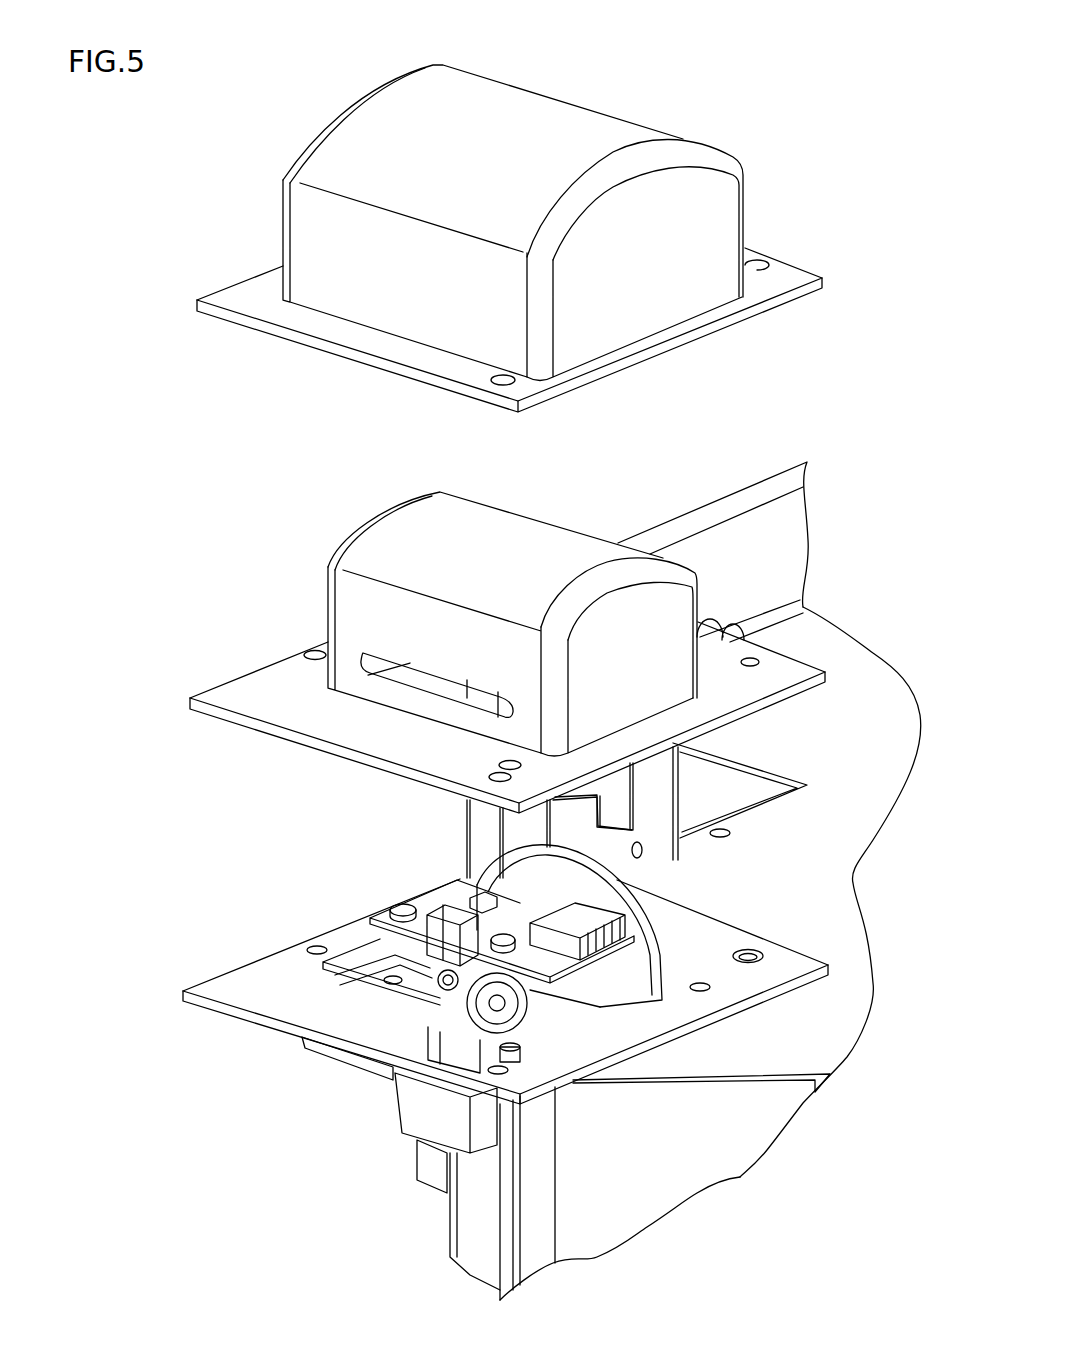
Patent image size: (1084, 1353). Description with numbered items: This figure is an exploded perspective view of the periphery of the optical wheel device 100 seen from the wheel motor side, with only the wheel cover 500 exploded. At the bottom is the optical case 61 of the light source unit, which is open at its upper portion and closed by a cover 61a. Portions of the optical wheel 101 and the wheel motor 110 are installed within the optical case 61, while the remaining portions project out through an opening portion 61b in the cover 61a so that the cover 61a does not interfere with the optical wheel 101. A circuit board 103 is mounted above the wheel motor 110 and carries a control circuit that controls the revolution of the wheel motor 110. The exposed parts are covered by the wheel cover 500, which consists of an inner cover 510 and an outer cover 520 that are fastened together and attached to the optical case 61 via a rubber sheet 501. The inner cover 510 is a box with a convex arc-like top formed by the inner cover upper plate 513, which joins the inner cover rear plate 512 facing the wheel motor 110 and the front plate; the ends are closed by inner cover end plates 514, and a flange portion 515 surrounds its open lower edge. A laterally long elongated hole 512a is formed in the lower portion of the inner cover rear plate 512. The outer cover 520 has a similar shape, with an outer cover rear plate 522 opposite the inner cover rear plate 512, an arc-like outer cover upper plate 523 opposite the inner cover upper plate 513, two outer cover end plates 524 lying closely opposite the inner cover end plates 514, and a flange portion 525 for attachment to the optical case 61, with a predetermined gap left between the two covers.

The wheel cover 500 is at (134, 293).
The outer cover 520 is at (331, 84).
The outer cover rear plate 522 is at (317, 225).
The outer cover upper plate 523 is at (432, 95).
The outer cover end plate 524 is at (690, 197).
The flange portion 525 is at (233, 300).
The inner cover 510 is at (236, 616).
The inner cover rear plate 512 is at (362, 605).
The elongated hole 512a is at (380, 663).
The inner cover upper plate 513 is at (407, 537).
The inner cover end plate 514 is at (655, 608).
The flange portion 515 is at (233, 697).
The optical wheel device 100 is at (169, 801).
The rubber sheet 501 is at (268, 978).
The circuit board 103 is at (433, 898).
The optical wheel 101 is at (627, 965).
The wheel motor 110 is at (480, 993).
The optical case 61 is at (622, 1175).
The cover 61a is at (803, 1037).
The opening portion 61b is at (367, 954).